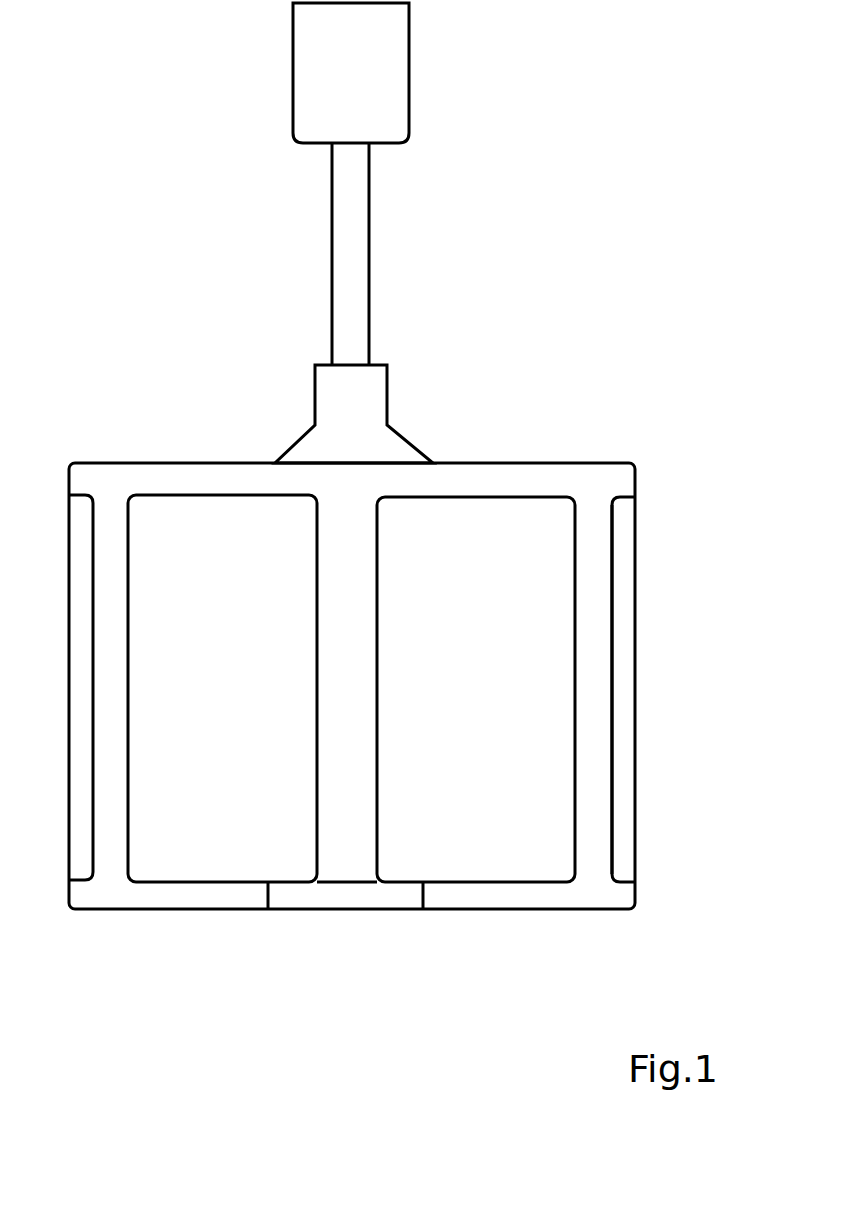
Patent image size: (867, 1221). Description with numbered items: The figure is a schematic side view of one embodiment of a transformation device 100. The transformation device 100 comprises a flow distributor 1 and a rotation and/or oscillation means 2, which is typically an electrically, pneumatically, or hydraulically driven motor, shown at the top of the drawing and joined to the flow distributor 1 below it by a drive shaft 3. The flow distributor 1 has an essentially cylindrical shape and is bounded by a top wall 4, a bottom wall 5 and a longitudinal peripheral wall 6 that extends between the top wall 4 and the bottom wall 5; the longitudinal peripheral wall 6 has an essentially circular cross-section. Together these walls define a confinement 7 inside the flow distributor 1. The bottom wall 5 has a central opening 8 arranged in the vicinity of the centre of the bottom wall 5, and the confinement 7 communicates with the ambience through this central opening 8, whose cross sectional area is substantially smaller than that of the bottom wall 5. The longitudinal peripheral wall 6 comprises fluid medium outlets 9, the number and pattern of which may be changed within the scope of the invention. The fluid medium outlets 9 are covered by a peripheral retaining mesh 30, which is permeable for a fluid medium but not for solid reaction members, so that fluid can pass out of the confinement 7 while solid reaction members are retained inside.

The transformation device 100 is at (580, 298).
The flow distributor 1 is at (496, 455).
The rotation and/or oscillation means 2 is at (385, 108).
The drive shaft 3 is at (348, 287).
The top wall 4 is at (551, 464).
The bottom wall 5 is at (533, 912).
The longitudinal peripheral wall 6 is at (635, 728).
The confinement 7 is at (537, 693).
The central opening 8 is at (312, 903).
The fluid medium outlets 9 is at (538, 793).
The peripheral retaining mesh 30 is at (538, 637).